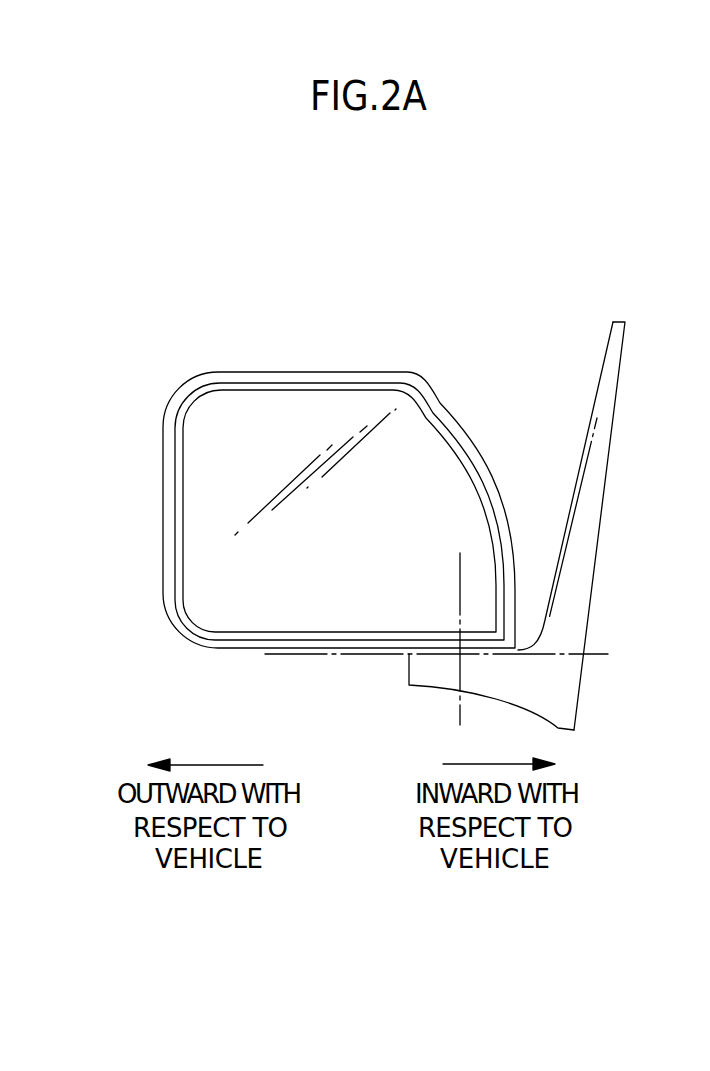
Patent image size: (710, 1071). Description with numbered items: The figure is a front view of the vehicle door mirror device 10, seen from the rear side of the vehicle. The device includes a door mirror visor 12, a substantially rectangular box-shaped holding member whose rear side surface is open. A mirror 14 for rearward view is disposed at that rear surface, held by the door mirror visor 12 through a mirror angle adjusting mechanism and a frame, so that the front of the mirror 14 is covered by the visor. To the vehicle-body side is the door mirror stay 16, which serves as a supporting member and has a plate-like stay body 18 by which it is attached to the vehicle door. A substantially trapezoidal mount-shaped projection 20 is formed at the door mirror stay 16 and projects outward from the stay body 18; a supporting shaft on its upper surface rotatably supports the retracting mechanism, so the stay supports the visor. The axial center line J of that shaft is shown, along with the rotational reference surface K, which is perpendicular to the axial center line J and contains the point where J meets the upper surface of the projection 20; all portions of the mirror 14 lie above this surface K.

The vehicle door mirror device 10 is at (382, 313).
The door mirror visor 12 is at (420, 376).
The mirror 14 is at (272, 410).
The door mirror stay 16 is at (626, 376).
The stay body 18 is at (600, 405).
The projection 20 is at (430, 677).
The axial center line J is at (460, 588).
The rotational reference surface K is at (312, 655).